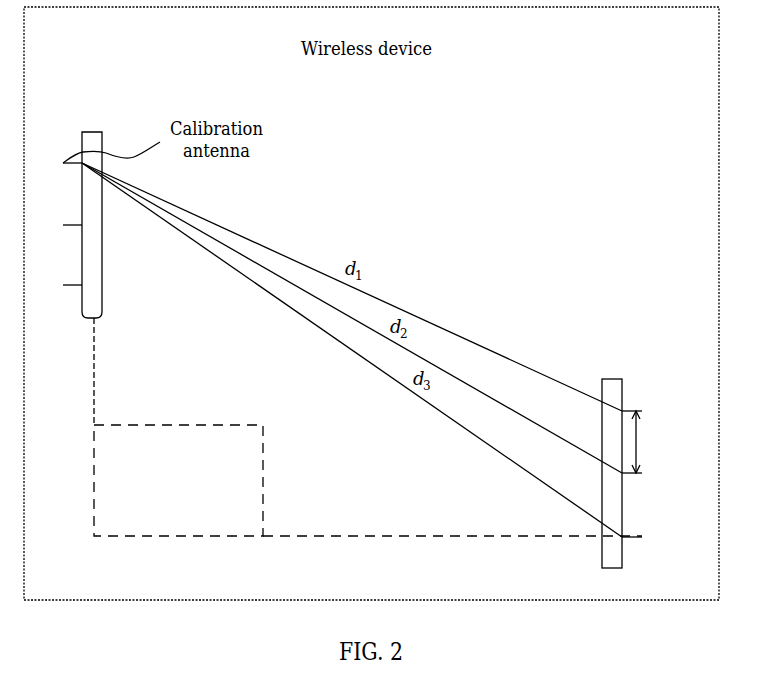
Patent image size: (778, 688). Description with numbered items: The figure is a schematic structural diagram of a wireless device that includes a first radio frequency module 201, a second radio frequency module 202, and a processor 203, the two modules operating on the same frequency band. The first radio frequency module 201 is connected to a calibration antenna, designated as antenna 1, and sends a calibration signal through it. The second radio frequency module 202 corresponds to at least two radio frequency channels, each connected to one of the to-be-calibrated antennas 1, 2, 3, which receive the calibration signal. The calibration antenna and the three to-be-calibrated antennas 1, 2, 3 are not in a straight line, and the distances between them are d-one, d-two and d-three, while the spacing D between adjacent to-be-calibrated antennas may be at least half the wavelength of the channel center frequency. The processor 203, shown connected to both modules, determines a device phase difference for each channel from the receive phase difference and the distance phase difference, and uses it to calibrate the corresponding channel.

The first radio frequency module 201 is at (100, 183).
The second radio frequency module 202 is at (615, 431).
The processor 203 is at (368, 427).
The antenna 1 is at (61, 161).
The antenna 2 is at (61, 226).
The antenna 3 is at (61, 284).